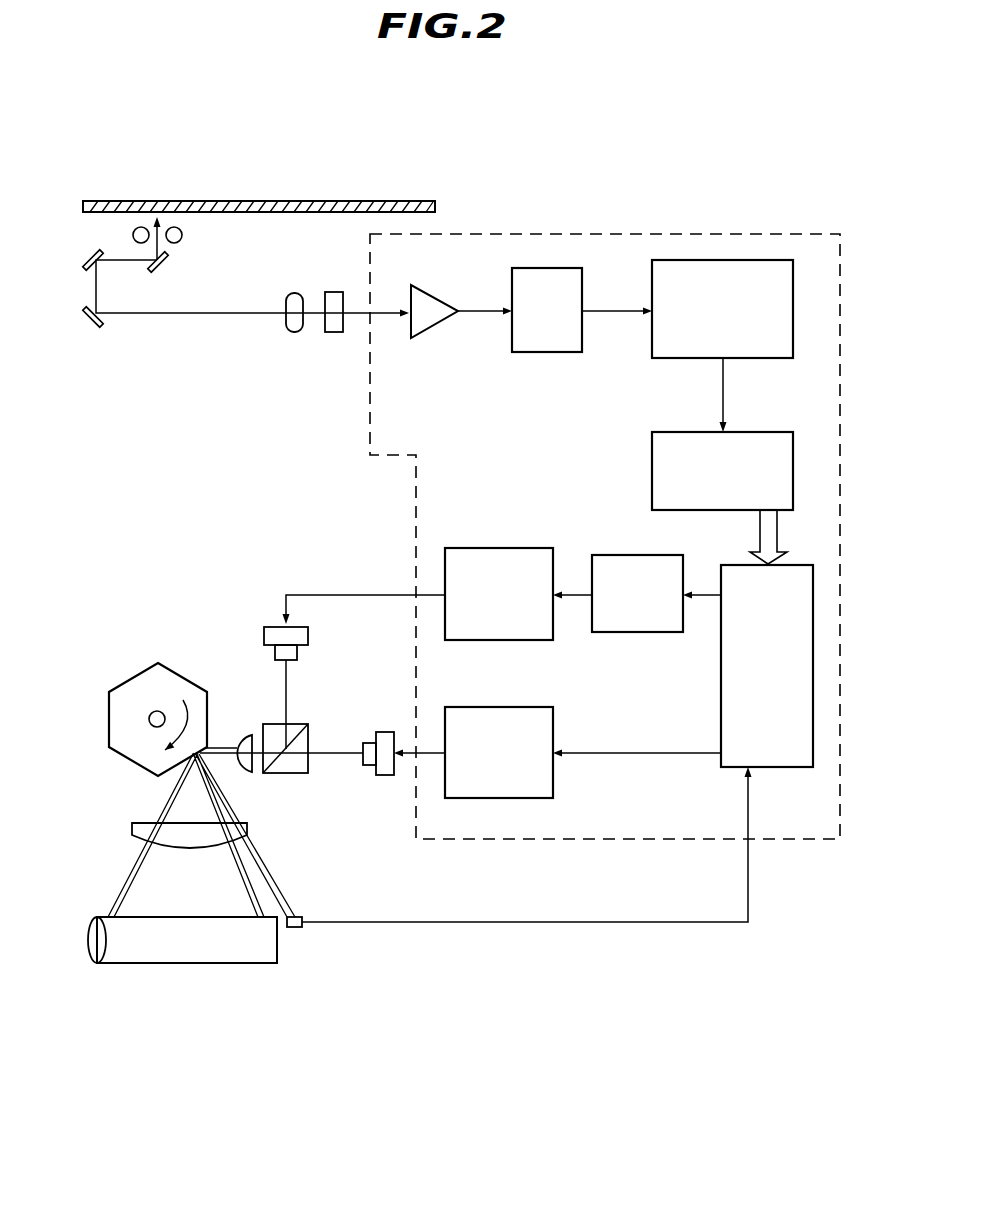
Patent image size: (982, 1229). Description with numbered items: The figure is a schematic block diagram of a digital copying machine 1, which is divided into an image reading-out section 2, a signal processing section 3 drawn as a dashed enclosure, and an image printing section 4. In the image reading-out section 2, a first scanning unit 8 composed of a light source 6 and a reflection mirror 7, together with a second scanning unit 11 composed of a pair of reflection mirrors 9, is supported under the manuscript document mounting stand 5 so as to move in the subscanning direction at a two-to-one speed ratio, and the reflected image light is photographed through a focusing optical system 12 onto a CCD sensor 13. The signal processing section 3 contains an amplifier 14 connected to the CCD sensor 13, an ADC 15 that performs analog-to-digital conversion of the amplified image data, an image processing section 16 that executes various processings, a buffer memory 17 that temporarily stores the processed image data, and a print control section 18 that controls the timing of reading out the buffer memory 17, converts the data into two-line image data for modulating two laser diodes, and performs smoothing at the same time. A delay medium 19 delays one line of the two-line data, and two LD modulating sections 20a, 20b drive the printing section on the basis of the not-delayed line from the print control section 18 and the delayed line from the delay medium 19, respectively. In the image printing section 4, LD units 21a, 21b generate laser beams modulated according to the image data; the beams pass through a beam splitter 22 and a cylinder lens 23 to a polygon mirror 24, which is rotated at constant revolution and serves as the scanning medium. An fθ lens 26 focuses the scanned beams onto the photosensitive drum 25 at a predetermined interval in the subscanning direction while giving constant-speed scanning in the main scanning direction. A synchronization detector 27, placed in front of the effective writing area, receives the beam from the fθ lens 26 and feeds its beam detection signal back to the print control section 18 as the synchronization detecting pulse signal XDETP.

The digital copying machine 1 is at (715, 152).
The image reading-out section 2 is at (247, 347).
The signal processing section 3 is at (830, 232).
The image printing section 4 is at (184, 972).
The manuscript document mounting stand 5 is at (284, 203).
The light source 6 is at (139, 227).
The mirror 7 is at (165, 268).
The first scanning unit 8 is at (150, 315).
The reflection mirror 9 is at (86, 256).
The second scanning unit 11 is at (86, 328).
The focusing optical system 12 is at (290, 292).
The CCD sensor 13 is at (330, 292).
The amplifier 14 is at (440, 300).
The ADC 15 is at (548, 268).
The image processing section 16 is at (684, 260).
The buffer memory 17 is at (652, 460).
The print control section 18 is at (737, 565).
The delay medium 19 is at (628, 555).
The LD modulating section 20a is at (522, 707).
The LD modulating section 20b is at (525, 548).
The LD unit 21a is at (387, 776).
The LD unit 21b is at (308, 640).
The beam splitter 22 is at (275, 735).
The cylinder lens 23 is at (243, 733).
The polygon mirror 24 is at (130, 680).
The photosensitive drum 25 is at (108, 943).
The fθ lens 26 is at (132, 829).
The synchronization detector 27 is at (297, 927).